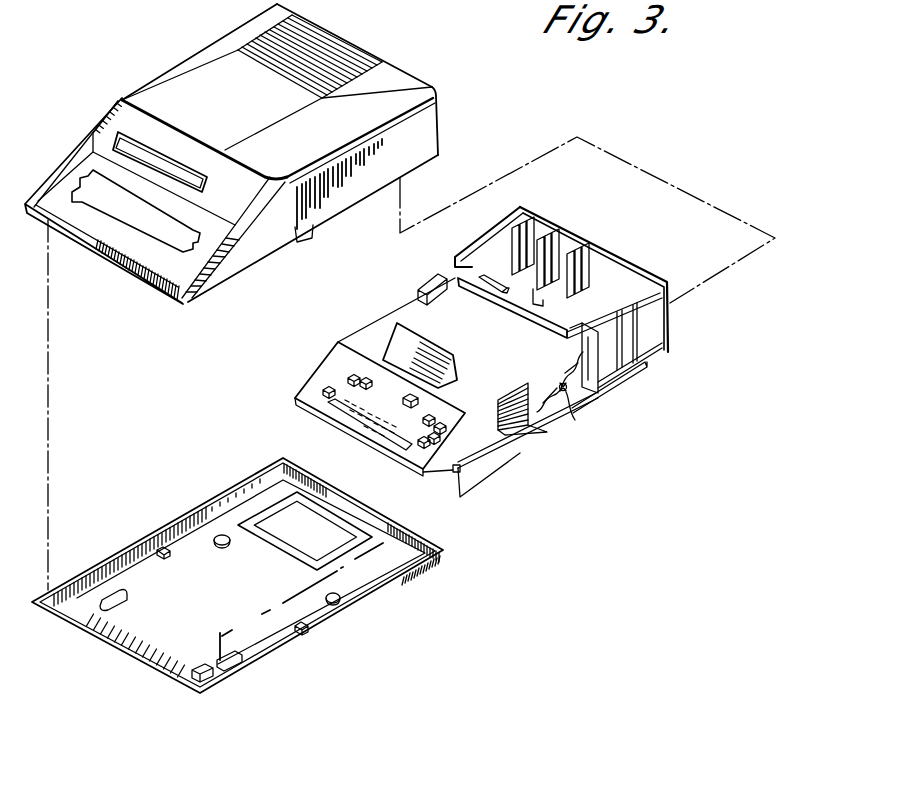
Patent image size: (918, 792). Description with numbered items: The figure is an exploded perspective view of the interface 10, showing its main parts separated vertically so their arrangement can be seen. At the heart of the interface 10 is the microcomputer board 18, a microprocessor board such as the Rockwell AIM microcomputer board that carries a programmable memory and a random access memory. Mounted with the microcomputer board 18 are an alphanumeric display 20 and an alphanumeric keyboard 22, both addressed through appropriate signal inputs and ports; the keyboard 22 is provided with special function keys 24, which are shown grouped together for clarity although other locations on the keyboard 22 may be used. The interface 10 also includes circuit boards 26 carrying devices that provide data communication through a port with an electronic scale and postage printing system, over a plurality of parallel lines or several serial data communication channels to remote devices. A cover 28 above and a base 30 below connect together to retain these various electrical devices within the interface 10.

The interface 10 is at (578, 455).
The microcomputer board 18 is at (497, 368).
The alphanumeric display 20 is at (395, 340).
The alphanumeric keyboard 22 is at (295, 398).
The special function keys 24 is at (420, 452).
The circuit boards 26 is at (568, 394).
The cover 28 is at (147, 80).
The base 30 is at (297, 648).